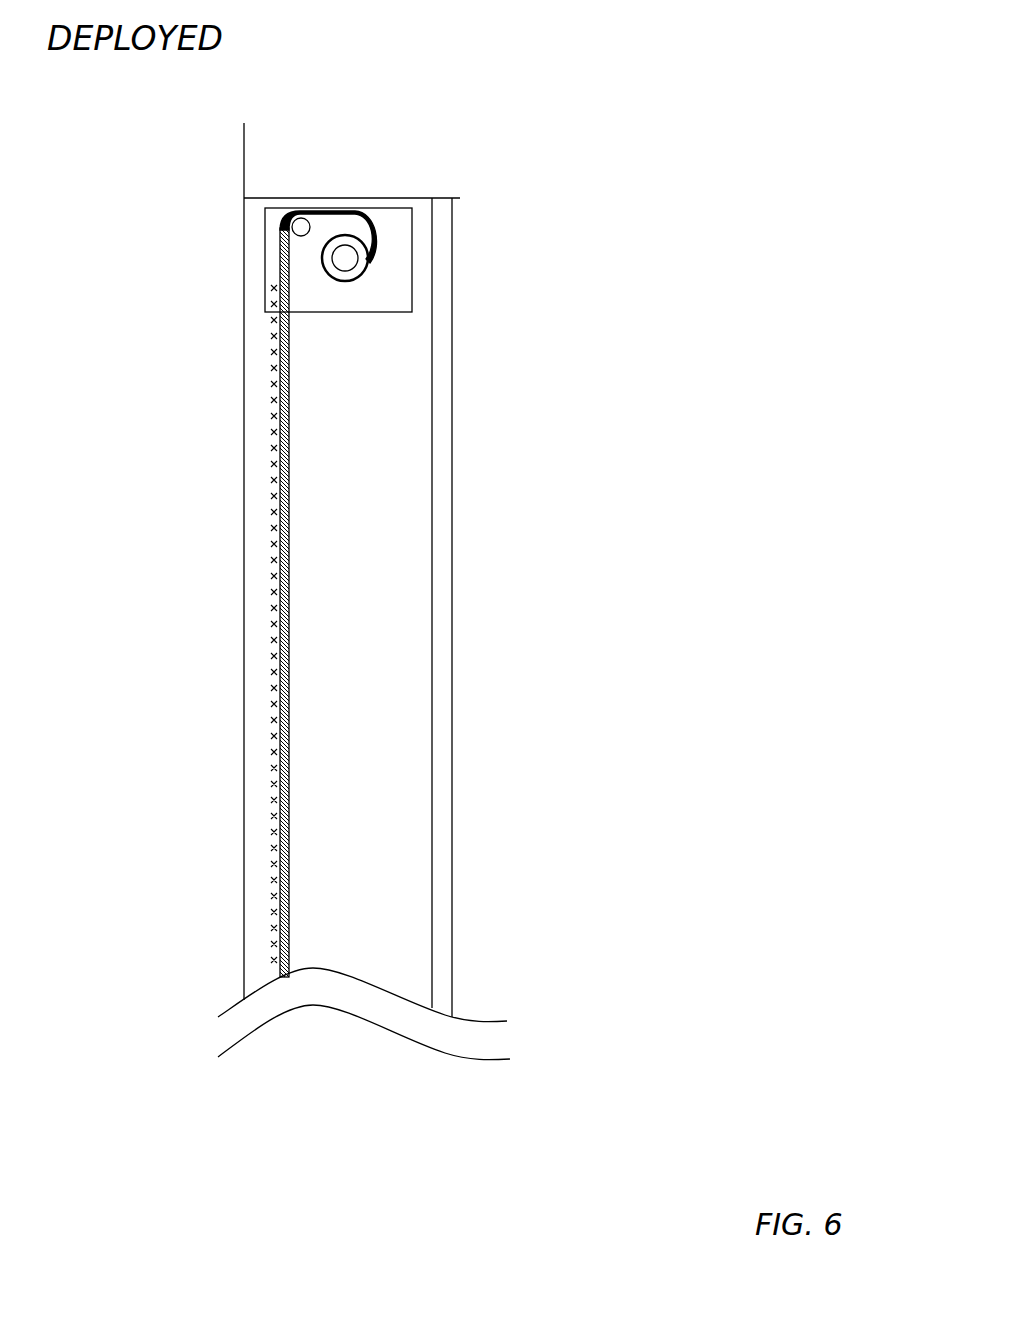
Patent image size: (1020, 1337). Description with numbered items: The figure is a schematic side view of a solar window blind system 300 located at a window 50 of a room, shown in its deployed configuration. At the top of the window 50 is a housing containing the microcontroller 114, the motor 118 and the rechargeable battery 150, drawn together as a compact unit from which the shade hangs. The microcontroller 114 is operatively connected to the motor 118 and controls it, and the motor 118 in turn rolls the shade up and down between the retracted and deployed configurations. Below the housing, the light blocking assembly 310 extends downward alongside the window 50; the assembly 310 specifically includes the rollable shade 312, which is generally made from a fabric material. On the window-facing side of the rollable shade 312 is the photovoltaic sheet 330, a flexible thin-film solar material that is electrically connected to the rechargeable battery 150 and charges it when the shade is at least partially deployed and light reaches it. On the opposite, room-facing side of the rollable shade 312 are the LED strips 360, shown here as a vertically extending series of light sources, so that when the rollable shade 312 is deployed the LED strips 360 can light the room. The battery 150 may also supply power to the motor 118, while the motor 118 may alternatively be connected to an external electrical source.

The solar window blind system 300 is at (811, 88).
The window 50 is at (464, 419).
The microcontroller 114 is at (410, 201).
The motor 118 is at (410, 201).
The rechargeable battery 150 is at (387, 216).
The light blocking assembly 310 is at (372, 602).
The rollable shade 312 is at (324, 700).
The photovoltaic sheet 330 is at (300, 884).
The LED strips 360 is at (262, 451).